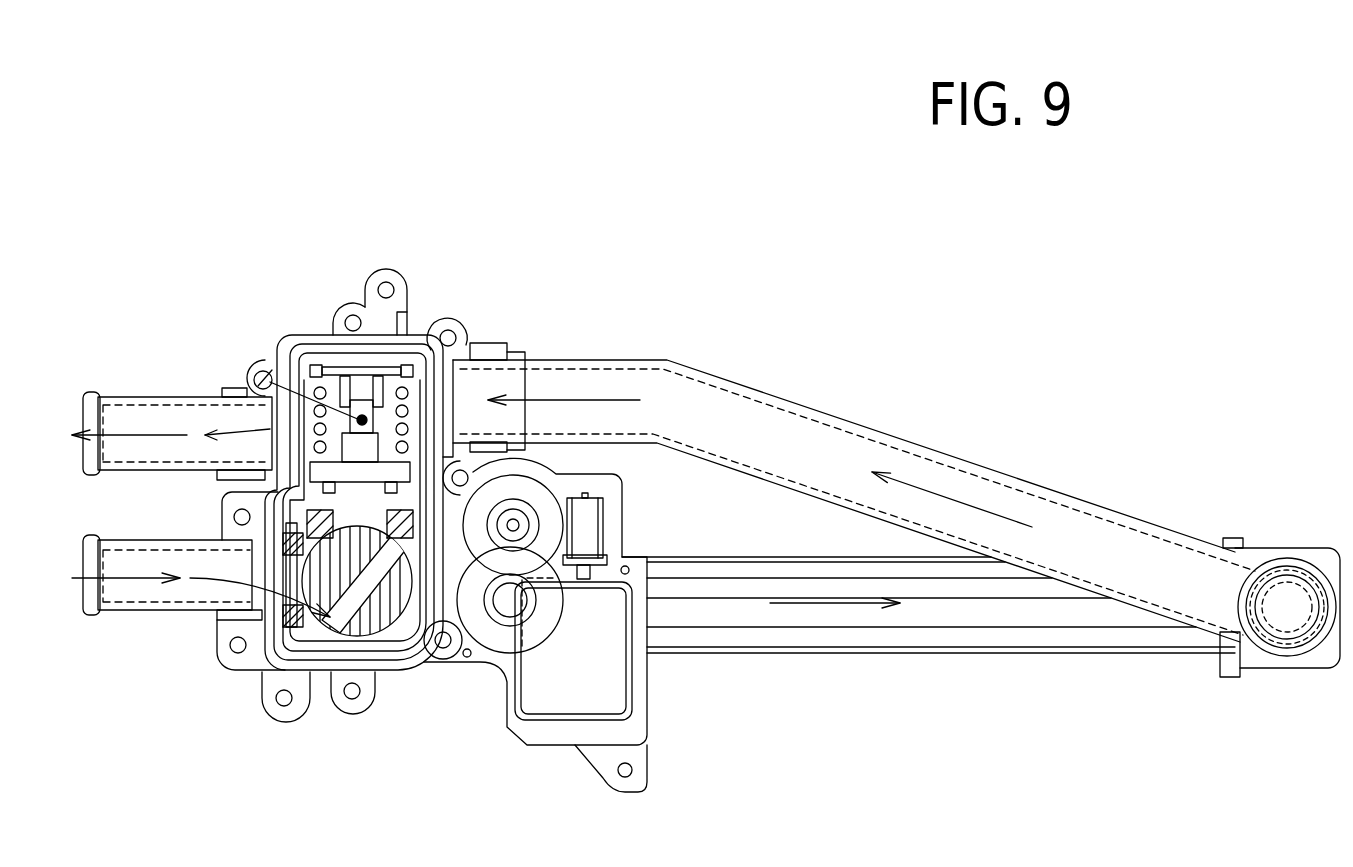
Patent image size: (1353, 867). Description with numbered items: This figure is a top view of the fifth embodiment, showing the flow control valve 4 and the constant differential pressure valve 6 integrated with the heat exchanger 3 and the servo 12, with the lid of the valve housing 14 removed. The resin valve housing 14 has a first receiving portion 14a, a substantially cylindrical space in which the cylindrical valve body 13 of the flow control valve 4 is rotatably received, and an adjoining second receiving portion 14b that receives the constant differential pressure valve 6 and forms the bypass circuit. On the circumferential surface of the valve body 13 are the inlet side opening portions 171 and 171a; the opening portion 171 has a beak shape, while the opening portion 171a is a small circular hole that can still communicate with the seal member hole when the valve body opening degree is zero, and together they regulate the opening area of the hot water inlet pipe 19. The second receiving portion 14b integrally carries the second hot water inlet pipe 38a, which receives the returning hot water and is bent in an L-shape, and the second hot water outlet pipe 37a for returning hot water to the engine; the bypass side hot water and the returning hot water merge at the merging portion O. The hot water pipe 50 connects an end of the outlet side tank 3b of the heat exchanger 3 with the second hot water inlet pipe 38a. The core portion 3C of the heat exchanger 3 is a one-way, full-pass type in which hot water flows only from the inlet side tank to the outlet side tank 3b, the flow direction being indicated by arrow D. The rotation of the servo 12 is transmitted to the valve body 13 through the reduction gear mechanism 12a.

The valve housing 14 is at (403, 680).
The first receiving portion 14a is at (390, 673).
The second receiving portion 14b is at (322, 333).
The valve body 13 is at (413, 667).
The constant differential pressure valve 6 is at (390, 463).
The merging portion O is at (261, 373).
The flow control valve 4 is at (368, 447).
The inlet side opening portion 171 is at (333, 627).
The inlet side opening portion 171a is at (350, 645).
The second hot water outlet pipe 37a is at (163, 413).
The hot water inlet pipe 19 is at (157, 592).
The second hot water inlet pipe 38a is at (512, 352).
The hot water pipe 50 is at (863, 427).
The servo 12 is at (610, 697).
The reduction gear mechanism 12a is at (553, 628).
The heat exchanger 3 is at (960, 657).
The core portion 3C is at (1058, 640).
The outlet side tank 3b is at (1288, 668).
The flow direction D is at (866, 607).